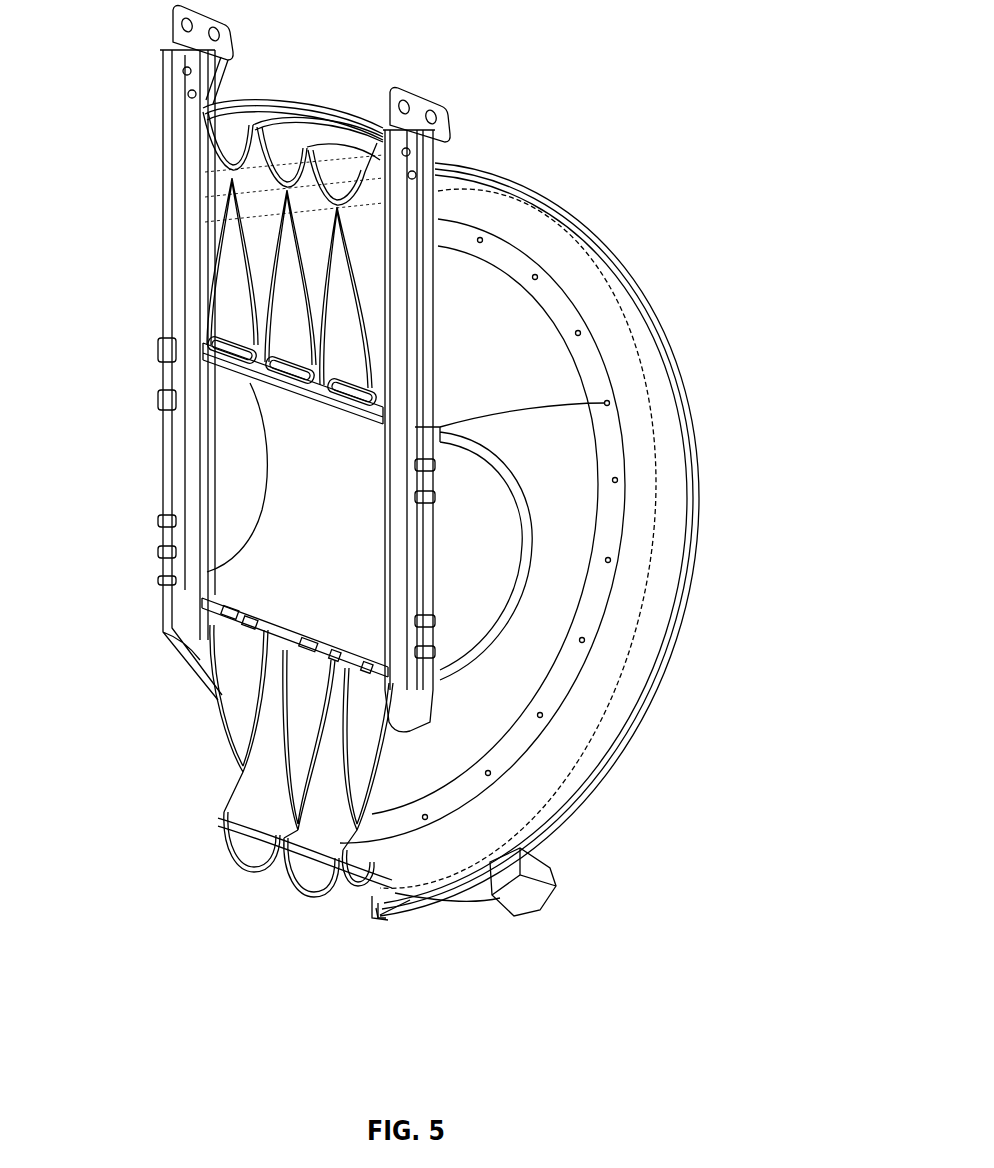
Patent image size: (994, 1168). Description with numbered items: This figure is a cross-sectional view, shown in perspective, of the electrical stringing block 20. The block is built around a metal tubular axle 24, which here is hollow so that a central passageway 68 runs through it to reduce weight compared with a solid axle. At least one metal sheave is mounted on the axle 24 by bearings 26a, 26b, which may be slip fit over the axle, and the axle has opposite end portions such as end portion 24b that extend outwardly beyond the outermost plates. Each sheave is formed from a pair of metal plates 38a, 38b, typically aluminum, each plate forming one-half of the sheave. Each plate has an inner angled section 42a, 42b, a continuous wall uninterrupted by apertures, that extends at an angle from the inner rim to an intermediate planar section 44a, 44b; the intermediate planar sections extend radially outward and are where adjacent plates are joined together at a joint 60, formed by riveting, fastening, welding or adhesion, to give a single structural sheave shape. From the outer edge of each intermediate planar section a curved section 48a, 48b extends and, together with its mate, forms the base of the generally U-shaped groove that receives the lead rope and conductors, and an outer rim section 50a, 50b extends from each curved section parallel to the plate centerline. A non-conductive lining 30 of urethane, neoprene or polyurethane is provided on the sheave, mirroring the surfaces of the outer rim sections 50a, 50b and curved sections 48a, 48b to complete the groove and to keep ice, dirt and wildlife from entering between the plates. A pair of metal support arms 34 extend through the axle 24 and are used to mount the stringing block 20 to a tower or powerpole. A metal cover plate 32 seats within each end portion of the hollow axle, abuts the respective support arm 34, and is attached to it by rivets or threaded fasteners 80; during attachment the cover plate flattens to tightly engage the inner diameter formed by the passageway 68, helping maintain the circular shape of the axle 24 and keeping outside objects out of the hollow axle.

The electrical stringing block 20 is at (651, 203).
The tubular axle 24 is at (607, 403).
The end portion of the axle 24b is at (455, 680).
The bearing 26a is at (333, 407).
The bearing 26b is at (375, 410).
The non-conductive lining 30 is at (373, 897).
The cover plate 32 is at (160, 470).
The support arm 34 is at (180, 207).
The metal plate 38a is at (228, 240).
The metal plate 38b is at (264, 228).
The inner angled section 42a is at (283, 755).
The inner angled section 42b is at (460, 722).
The intermediate planar section 44a is at (320, 845).
The intermediate planar section 44b is at (618, 462).
The curved section 48a is at (353, 880).
The curved section 48b is at (415, 886).
The outer rim section 50a is at (330, 897).
The outer rim section 50b is at (377, 910).
The joint 60 is at (553, 885).
The central passageway 68 is at (298, 580).
The rivets or threaded fasteners 80 is at (165, 527).